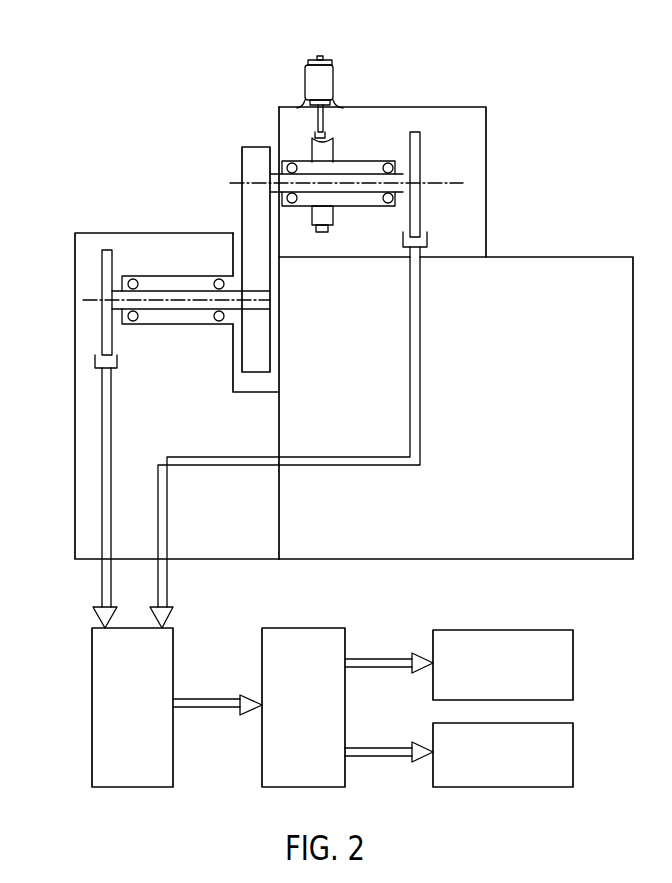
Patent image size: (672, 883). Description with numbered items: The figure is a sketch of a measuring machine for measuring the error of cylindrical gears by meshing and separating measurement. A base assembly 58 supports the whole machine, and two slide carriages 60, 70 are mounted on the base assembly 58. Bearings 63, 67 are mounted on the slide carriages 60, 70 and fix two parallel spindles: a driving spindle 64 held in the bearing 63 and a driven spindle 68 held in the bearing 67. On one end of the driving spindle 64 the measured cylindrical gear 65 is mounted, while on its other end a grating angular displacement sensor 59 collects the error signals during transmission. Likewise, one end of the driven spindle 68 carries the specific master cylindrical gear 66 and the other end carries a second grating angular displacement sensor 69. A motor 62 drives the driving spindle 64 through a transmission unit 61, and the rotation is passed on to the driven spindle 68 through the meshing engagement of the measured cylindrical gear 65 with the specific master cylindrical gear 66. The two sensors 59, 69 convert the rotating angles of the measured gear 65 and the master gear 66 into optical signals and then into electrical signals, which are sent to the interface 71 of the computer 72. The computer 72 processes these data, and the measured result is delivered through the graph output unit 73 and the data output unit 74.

The base assembly 58 is at (565, 257).
The grating angular displacement sensor 59 is at (415, 223).
The slide carriage 60 is at (475, 123).
The transmission unit 61 is at (323, 150).
The motor 62 is at (327, 80).
The bearing 63 is at (292, 162).
The driving spindle 64 is at (300, 187).
The measured cylindrical gear 65 is at (255, 162).
The specific master cylindrical gear 66 is at (257, 240).
The bearing 67 is at (210, 275).
The driven spindle 68 is at (130, 290).
The grating angular displacement sensor 69 is at (105, 343).
The slide carriage 70 is at (92, 450).
The interface 71 is at (158, 772).
The computer 72 is at (345, 778).
The graph output unit 73 is at (562, 753).
The data output unit 74 is at (562, 671).